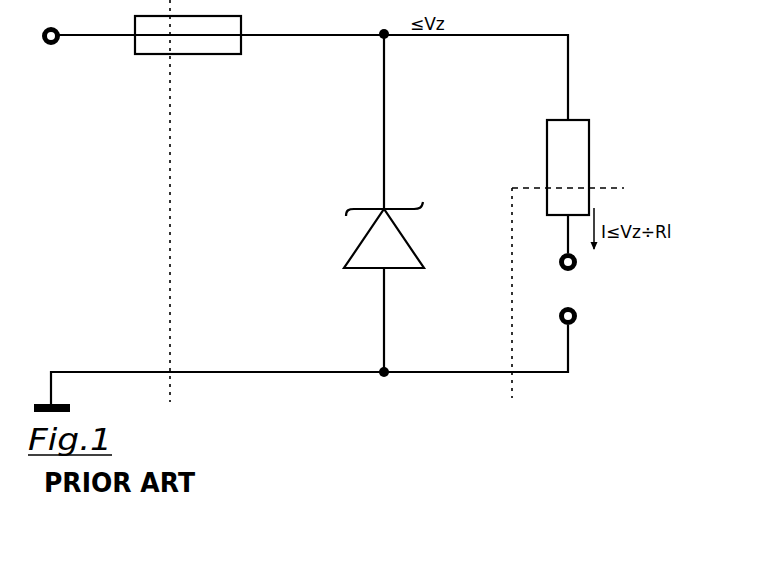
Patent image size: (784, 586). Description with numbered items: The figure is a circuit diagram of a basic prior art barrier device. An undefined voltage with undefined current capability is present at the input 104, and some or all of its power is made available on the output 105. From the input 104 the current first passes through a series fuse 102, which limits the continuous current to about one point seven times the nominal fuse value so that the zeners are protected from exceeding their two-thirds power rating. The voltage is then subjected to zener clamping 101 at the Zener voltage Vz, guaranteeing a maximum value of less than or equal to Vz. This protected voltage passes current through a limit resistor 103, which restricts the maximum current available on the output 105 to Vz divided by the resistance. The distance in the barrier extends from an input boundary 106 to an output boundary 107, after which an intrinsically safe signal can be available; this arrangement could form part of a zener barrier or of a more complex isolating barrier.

The zener clamping 101 is at (358, 240).
The series fuse 102 is at (205, 60).
The limit resistor 103 is at (545, 140).
The input 104 is at (52, 53).
The output 105 is at (568, 289).
The input boundary 106 is at (172, 320).
The output boundary 107 is at (510, 321).